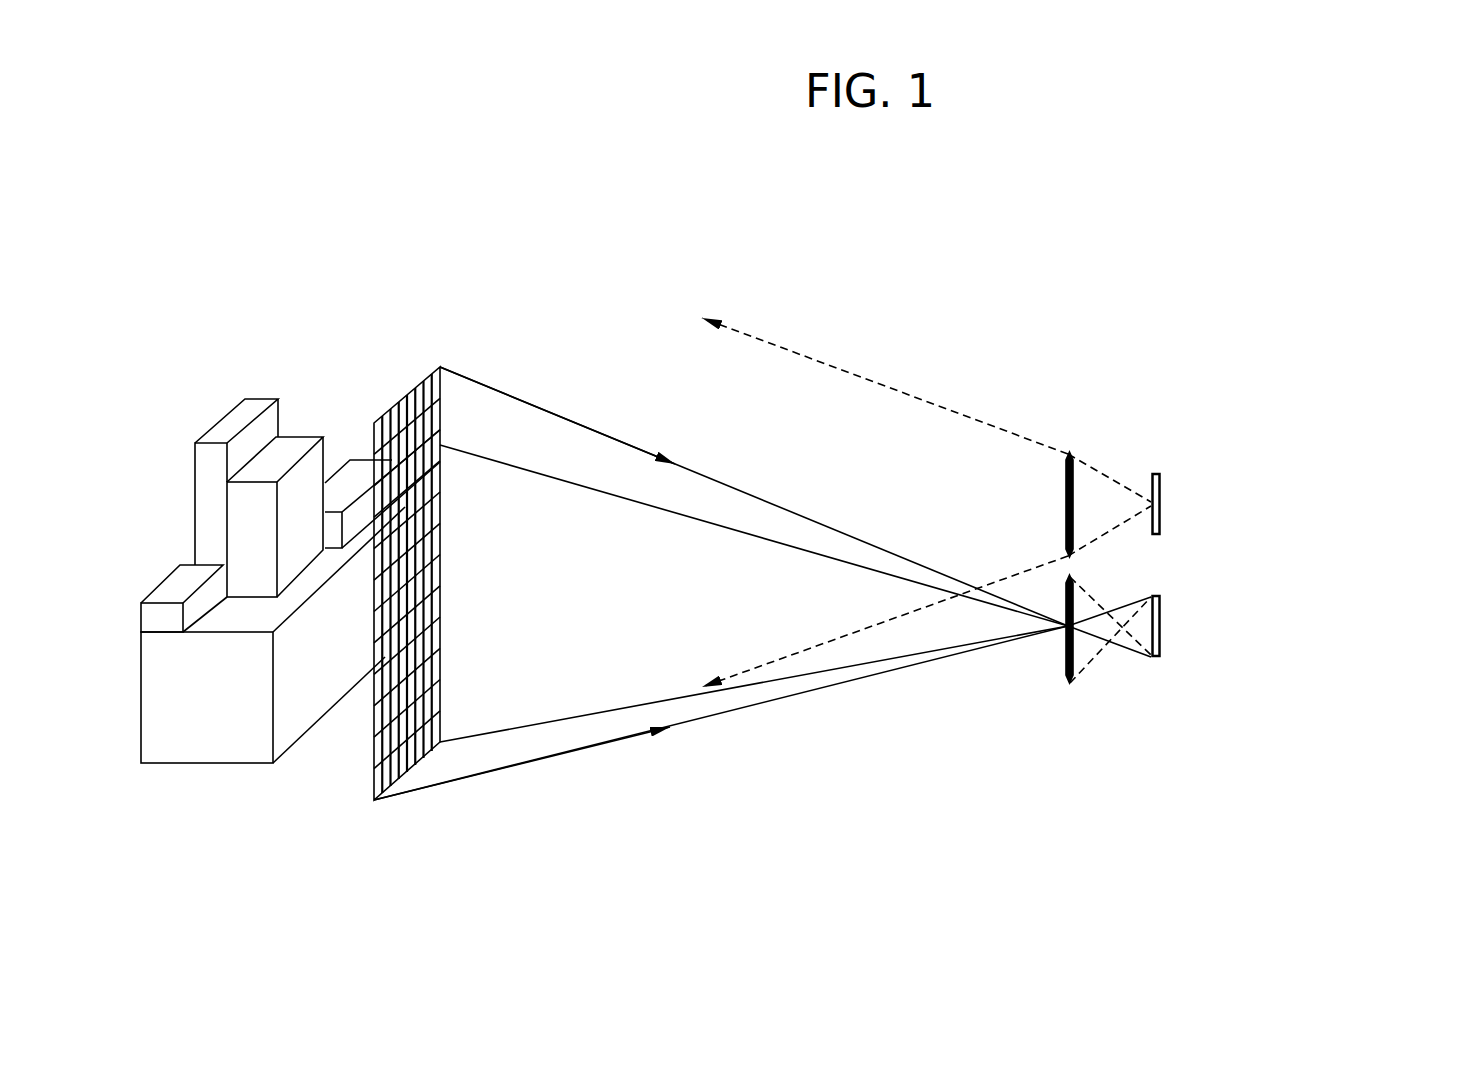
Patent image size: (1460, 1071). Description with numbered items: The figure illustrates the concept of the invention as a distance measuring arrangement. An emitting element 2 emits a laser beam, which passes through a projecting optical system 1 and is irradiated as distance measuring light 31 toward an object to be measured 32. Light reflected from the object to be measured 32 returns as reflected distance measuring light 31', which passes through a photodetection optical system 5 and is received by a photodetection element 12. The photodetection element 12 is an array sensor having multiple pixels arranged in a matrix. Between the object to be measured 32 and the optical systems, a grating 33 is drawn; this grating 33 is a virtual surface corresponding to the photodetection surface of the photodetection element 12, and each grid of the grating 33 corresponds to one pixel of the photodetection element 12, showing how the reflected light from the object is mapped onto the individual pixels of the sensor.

The projecting optical system 1 is at (1070, 455).
The emitting element 2 is at (1162, 490).
The photodetection optical system 5 is at (1073, 683).
The photodetection element 12 is at (1162, 615).
The distance measuring light 31 is at (926, 479).
The reflected distance measuring light 31' is at (762, 608).
The object to be measured 32 is at (306, 437).
The grating 33 is at (407, 390).